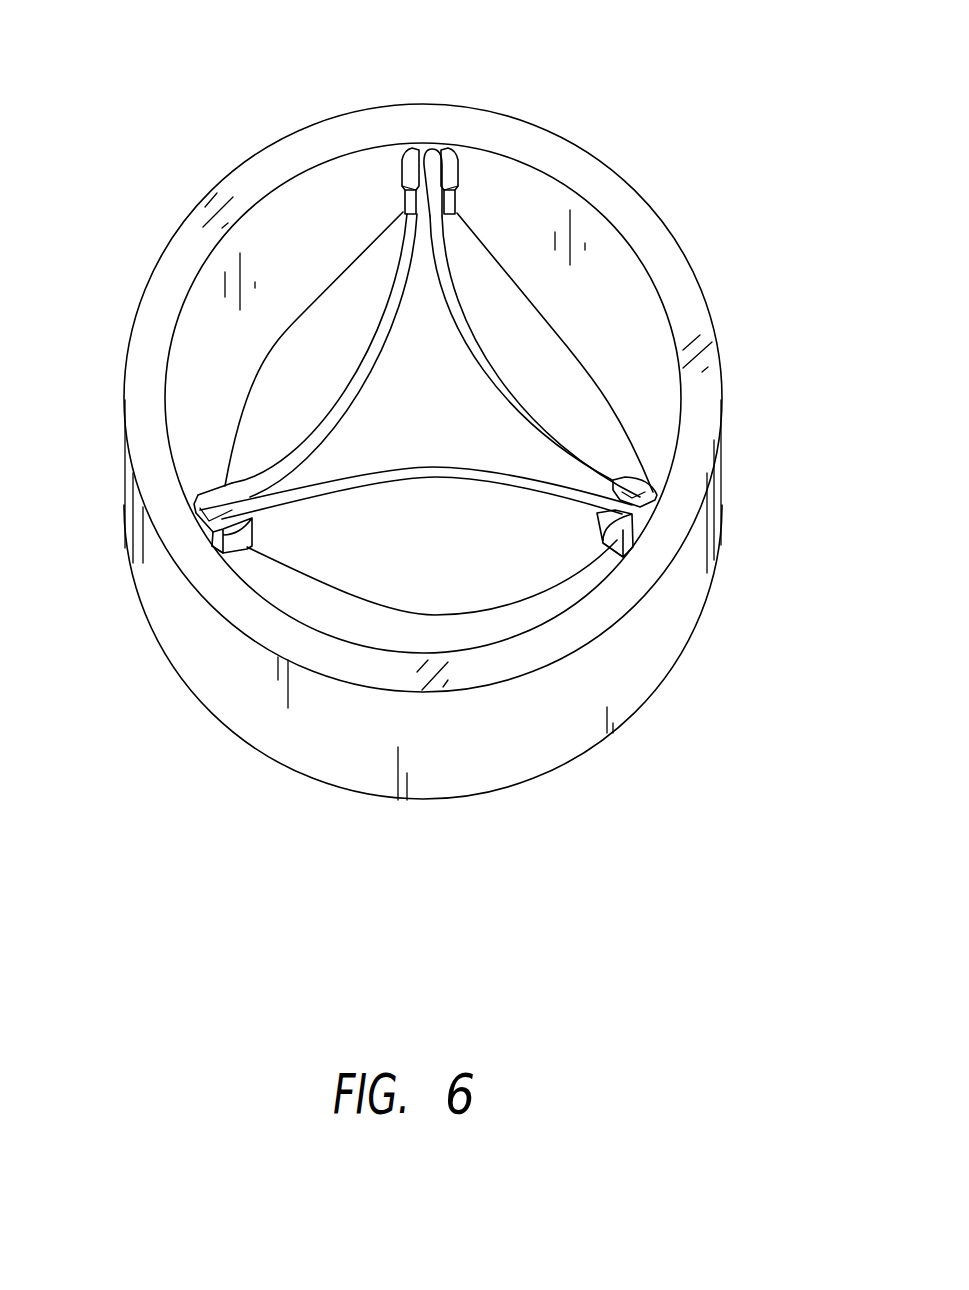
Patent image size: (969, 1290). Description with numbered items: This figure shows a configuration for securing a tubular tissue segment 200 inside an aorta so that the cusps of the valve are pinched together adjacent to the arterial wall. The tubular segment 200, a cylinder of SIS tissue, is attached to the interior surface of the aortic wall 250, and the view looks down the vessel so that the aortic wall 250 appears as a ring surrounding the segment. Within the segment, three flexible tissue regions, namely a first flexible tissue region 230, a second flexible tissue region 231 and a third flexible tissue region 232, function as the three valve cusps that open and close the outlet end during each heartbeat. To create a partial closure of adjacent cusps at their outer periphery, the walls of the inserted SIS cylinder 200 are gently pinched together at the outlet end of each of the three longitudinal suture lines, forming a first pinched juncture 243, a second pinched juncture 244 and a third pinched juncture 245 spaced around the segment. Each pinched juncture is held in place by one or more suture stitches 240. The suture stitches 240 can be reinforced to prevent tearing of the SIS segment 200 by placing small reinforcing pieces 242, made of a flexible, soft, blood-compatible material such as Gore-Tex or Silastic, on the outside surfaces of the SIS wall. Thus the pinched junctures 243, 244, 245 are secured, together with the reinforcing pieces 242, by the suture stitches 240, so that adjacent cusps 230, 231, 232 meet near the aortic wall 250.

The tubular segment 200 is at (387, 468).
The first flexible tissue region 230 is at (353, 346).
The second flexible tissue region 231 is at (572, 397).
The third flexible tissue region 232 is at (451, 538).
The suture stitches 240 is at (457, 178).
The reinforcing pieces 242 is at (662, 520).
The first pinched juncture 243 is at (192, 527).
The second pinched juncture 244 is at (433, 138).
The third pinched juncture 245 is at (658, 525).
The aortic wall 250 is at (695, 273).